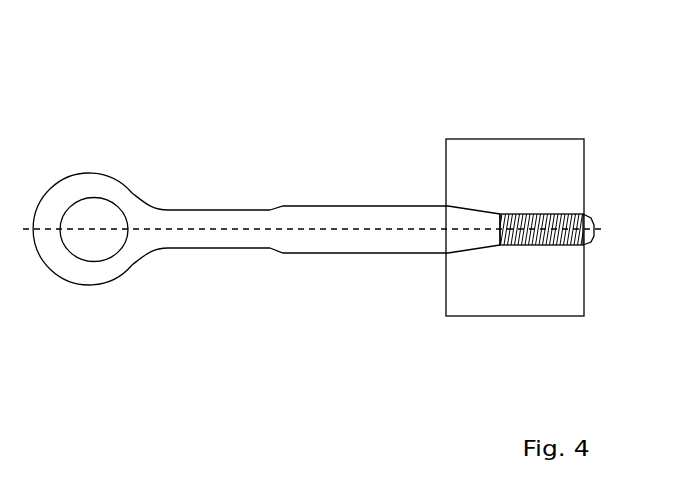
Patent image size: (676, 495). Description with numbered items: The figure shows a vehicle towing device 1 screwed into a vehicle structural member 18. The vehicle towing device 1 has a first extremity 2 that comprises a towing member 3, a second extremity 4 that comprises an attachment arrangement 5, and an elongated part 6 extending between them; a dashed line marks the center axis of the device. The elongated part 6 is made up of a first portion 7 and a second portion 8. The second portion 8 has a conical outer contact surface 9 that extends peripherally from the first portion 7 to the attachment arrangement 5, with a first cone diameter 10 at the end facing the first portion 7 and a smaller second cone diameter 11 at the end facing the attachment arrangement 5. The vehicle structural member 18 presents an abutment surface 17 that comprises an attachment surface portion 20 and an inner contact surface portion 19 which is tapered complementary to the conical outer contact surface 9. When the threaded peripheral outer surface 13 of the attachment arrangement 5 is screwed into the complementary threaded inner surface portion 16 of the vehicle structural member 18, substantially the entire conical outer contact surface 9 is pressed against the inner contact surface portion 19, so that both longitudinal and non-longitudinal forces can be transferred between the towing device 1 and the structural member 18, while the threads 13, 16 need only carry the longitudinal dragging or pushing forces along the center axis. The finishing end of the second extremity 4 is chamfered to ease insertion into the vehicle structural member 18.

The vehicle towing device 1 is at (297, 125).
The first extremity 2 is at (79, 295).
The towing member 3 is at (84, 188).
The second extremity 4 is at (617, 330).
The attachment arrangement 5 is at (598, 255).
The elongated part 6 is at (310, 382).
The first portion 7 is at (285, 275).
The second portion 8 is at (427, 339).
The conical outer contact surface 9 is at (480, 248).
The first cone diameter 10 is at (446, 210).
The second cone diameter 11 is at (500, 215).
The threaded peripheral outer surface 13 is at (568, 247).
The threaded inner surface portion 16 is at (573, 215).
The abutment surface 17 is at (505, 196).
The vehicle structural member 18 is at (547, 157).
The inner contact surface portion 19 is at (465, 203).
The attachment surface portion 20 is at (555, 210).